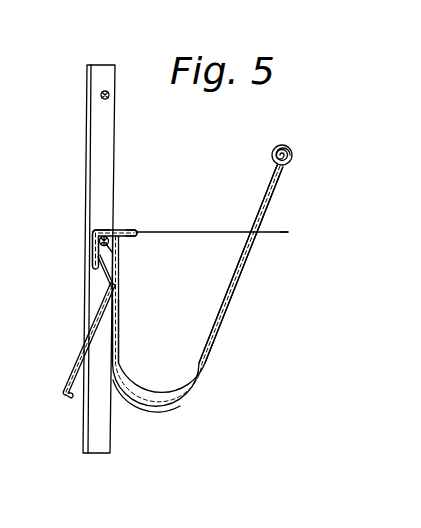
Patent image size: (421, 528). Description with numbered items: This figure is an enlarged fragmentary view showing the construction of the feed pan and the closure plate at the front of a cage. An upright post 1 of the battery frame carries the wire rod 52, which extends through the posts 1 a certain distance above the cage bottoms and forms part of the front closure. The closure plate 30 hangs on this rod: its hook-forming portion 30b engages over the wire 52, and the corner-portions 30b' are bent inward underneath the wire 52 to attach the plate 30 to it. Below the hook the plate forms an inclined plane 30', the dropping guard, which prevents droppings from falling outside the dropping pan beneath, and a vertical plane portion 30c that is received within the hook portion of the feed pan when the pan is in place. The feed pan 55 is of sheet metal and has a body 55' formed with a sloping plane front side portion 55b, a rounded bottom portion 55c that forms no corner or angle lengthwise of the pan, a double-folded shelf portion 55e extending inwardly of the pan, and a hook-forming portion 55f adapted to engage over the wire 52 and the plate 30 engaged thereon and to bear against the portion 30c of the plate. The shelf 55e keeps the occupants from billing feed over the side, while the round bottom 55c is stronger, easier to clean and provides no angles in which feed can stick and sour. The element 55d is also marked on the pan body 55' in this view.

The post 1 is at (97, 176).
The wire rod 52 is at (114, 229).
The feed pan 55 is at (188, 285).
The body 55' is at (263, 254).
The sloping plane front side portion 55b is at (297, 234).
The rounded bottom portion 55c is at (187, 399).
The stem of bracket 55d is at (119, 347).
The double-folded shelf portion 55e is at (131, 239).
The hook-forming portion 55f is at (92, 238).
The closure plate 30 is at (78, 338).
The inclined plane 30' is at (56, 377).
The hook-forming portion 30b is at (76, 258).
The corner-portions 30b' is at (140, 267).
The vertical plane portion 30c is at (105, 266).